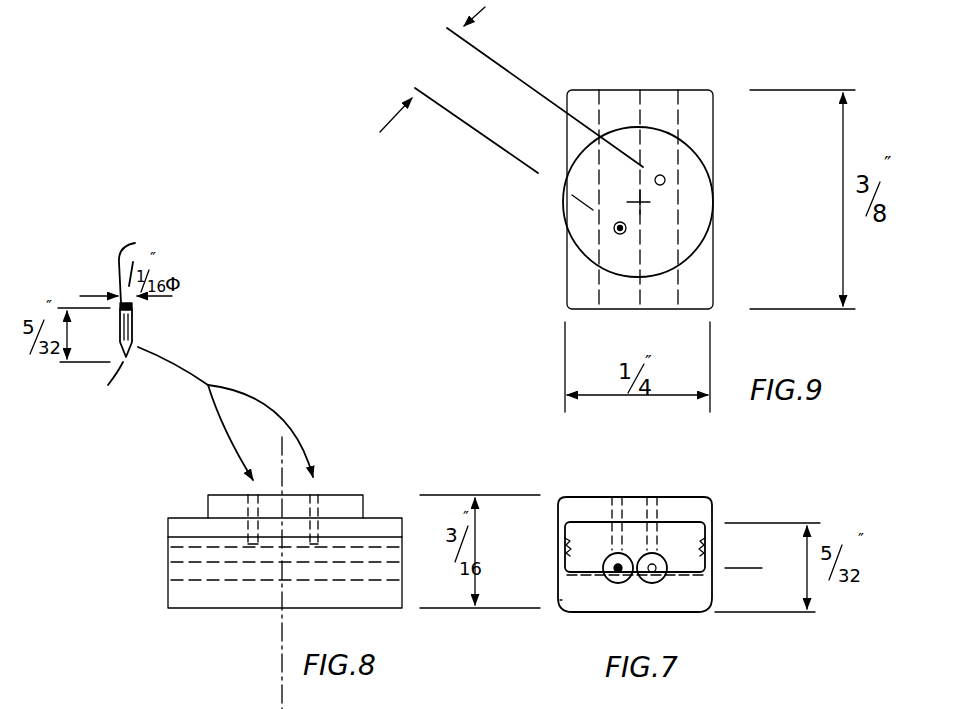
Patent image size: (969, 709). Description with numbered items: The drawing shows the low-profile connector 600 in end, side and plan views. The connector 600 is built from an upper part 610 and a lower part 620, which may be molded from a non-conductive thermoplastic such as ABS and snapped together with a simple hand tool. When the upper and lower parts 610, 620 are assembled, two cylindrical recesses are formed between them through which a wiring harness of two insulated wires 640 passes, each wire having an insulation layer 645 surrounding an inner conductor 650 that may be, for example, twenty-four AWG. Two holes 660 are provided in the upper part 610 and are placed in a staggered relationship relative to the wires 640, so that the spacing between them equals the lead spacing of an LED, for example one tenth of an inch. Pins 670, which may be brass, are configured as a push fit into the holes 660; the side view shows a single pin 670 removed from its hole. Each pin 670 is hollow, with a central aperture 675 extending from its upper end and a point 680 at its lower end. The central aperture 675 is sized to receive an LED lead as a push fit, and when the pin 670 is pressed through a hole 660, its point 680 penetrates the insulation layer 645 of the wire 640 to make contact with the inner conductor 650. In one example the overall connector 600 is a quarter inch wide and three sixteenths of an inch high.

In FIG. 9, the low-profile connector 600 is at (563, 228).
In FIG. 7, the upper part 610 is at (582, 508).
In FIG. 7, the lower part 620 is at (683, 602).
In FIG. 7, the insulated wires 640 is at (618, 553).
In FIG. 7, the insulation layer 645 is at (652, 568).
In FIG. 7, the inner conductor 650 is at (617, 568).
In FIG. 9, the holes 660 is at (625, 226).
In FIG. 8, the holes 660 is at (257, 497).
In FIG. 8, the pins 670 is at (143, 328).
In FIG. 8, the central aperture 675 is at (156, 263).
In FIG. 8, the point 680 is at (99, 394).